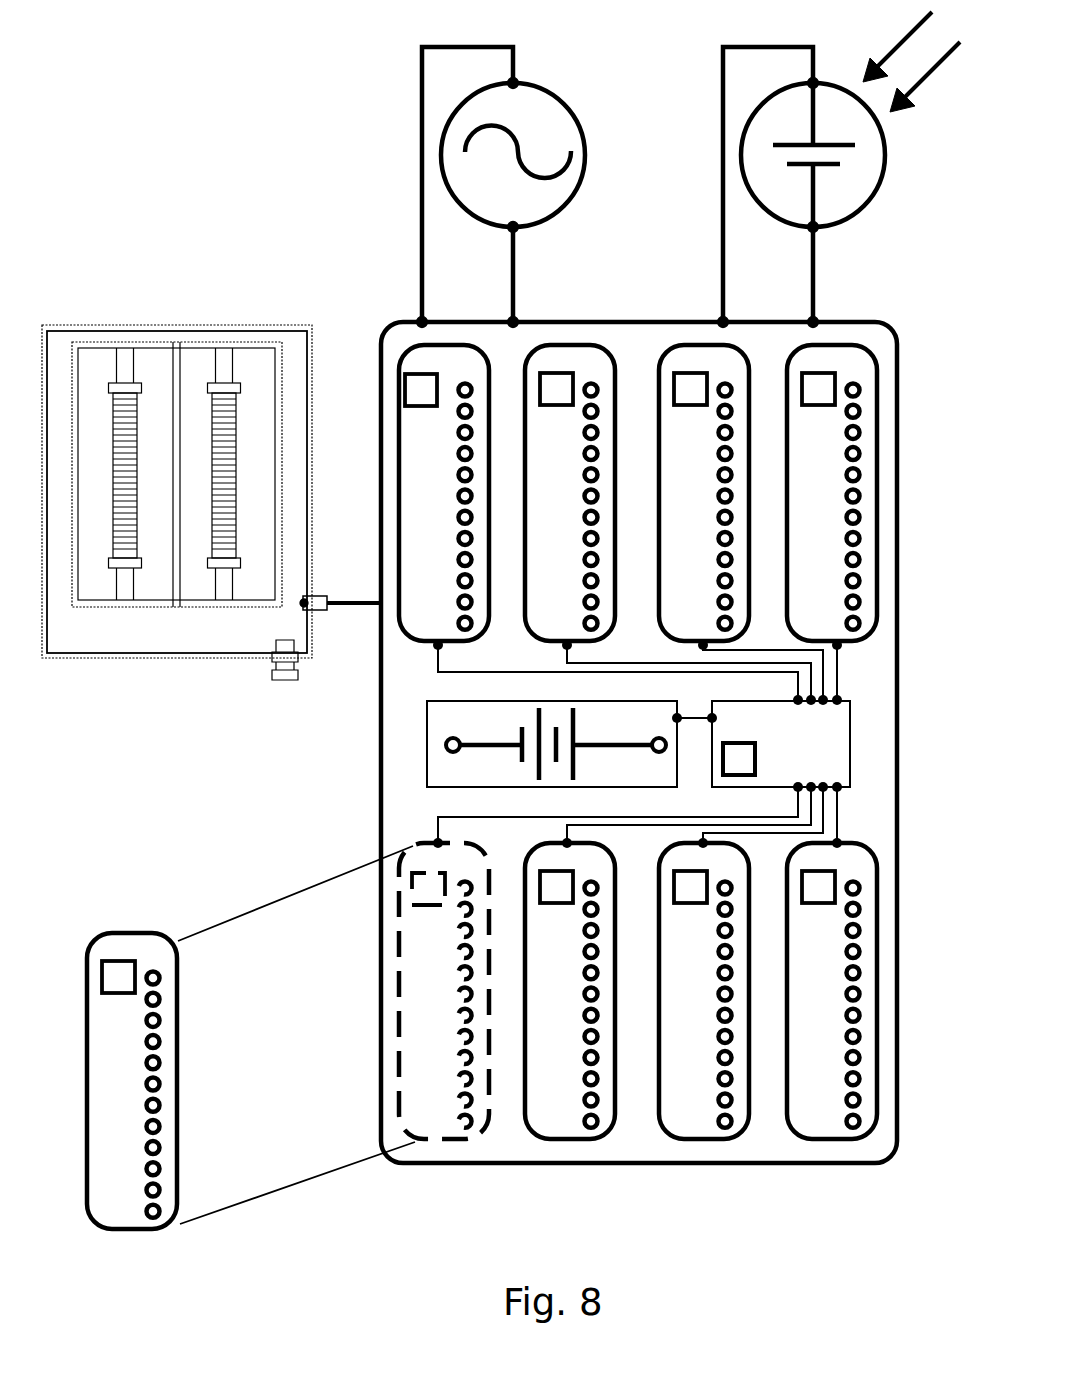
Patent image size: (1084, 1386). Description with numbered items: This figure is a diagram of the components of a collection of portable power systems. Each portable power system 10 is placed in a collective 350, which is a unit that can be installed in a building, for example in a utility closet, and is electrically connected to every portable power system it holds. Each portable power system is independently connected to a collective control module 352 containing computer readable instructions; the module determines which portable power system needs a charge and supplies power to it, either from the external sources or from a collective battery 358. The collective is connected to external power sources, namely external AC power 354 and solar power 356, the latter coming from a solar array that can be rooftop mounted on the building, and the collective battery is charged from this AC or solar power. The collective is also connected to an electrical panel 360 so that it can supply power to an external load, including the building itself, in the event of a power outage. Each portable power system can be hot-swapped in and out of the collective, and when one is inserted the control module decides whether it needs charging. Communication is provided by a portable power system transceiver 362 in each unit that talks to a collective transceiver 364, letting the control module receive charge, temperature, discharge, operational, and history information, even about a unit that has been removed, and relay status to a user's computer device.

The portable power system 10 is at (880, 465).
The collective 350 is at (898, 666).
The collective control module 352 is at (800, 744).
The external AC power 354 is at (555, 93).
The solar power 356 is at (870, 205).
The collective battery 358 is at (427, 746).
The electrical panel 360 is at (218, 325).
The portable power system transceiver 362 is at (405, 386).
The collective transceiver 364 is at (755, 768).